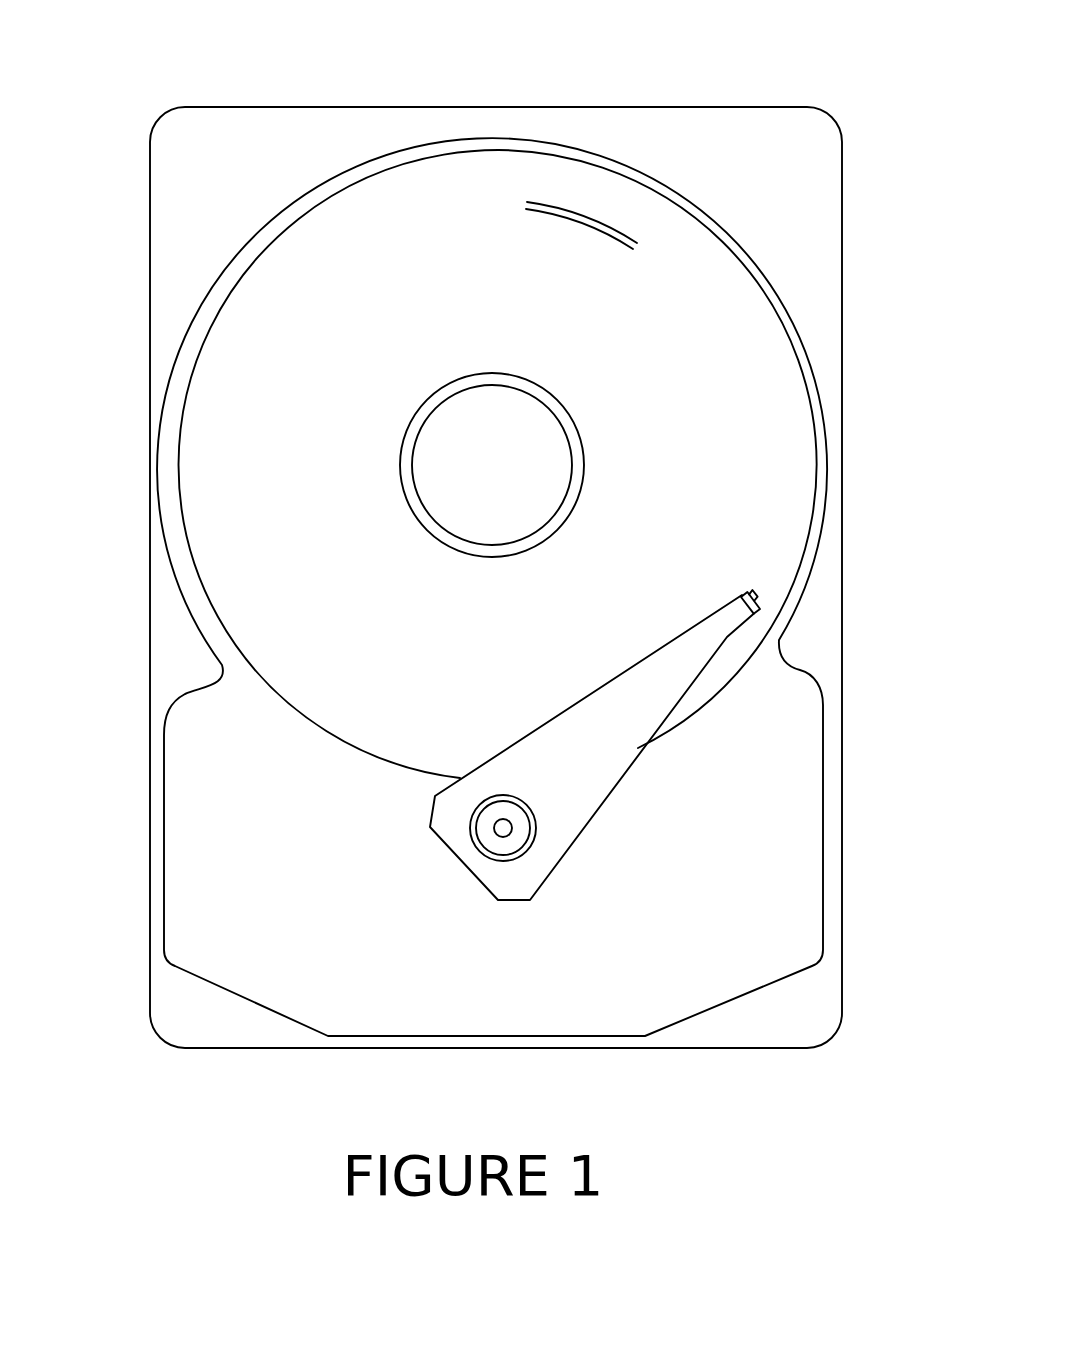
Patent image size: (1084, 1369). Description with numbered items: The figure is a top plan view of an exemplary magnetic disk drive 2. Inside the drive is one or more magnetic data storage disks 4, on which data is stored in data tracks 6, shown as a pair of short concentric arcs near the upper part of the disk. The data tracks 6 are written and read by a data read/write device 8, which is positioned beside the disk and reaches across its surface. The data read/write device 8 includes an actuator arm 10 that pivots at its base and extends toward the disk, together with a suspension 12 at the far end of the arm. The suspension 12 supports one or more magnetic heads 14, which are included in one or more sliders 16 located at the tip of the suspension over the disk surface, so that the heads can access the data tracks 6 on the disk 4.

The magnetic disk drive 2 is at (105, 172).
The magnetic data storage disk 4 is at (370, 232).
The data tracks 6 is at (550, 202).
The data read/write device 8 is at (696, 719).
The actuator arm 10 is at (574, 768).
The suspension 12 is at (729, 620).
The magnetic head 14 is at (855, 570).
The slider 16 is at (757, 594).